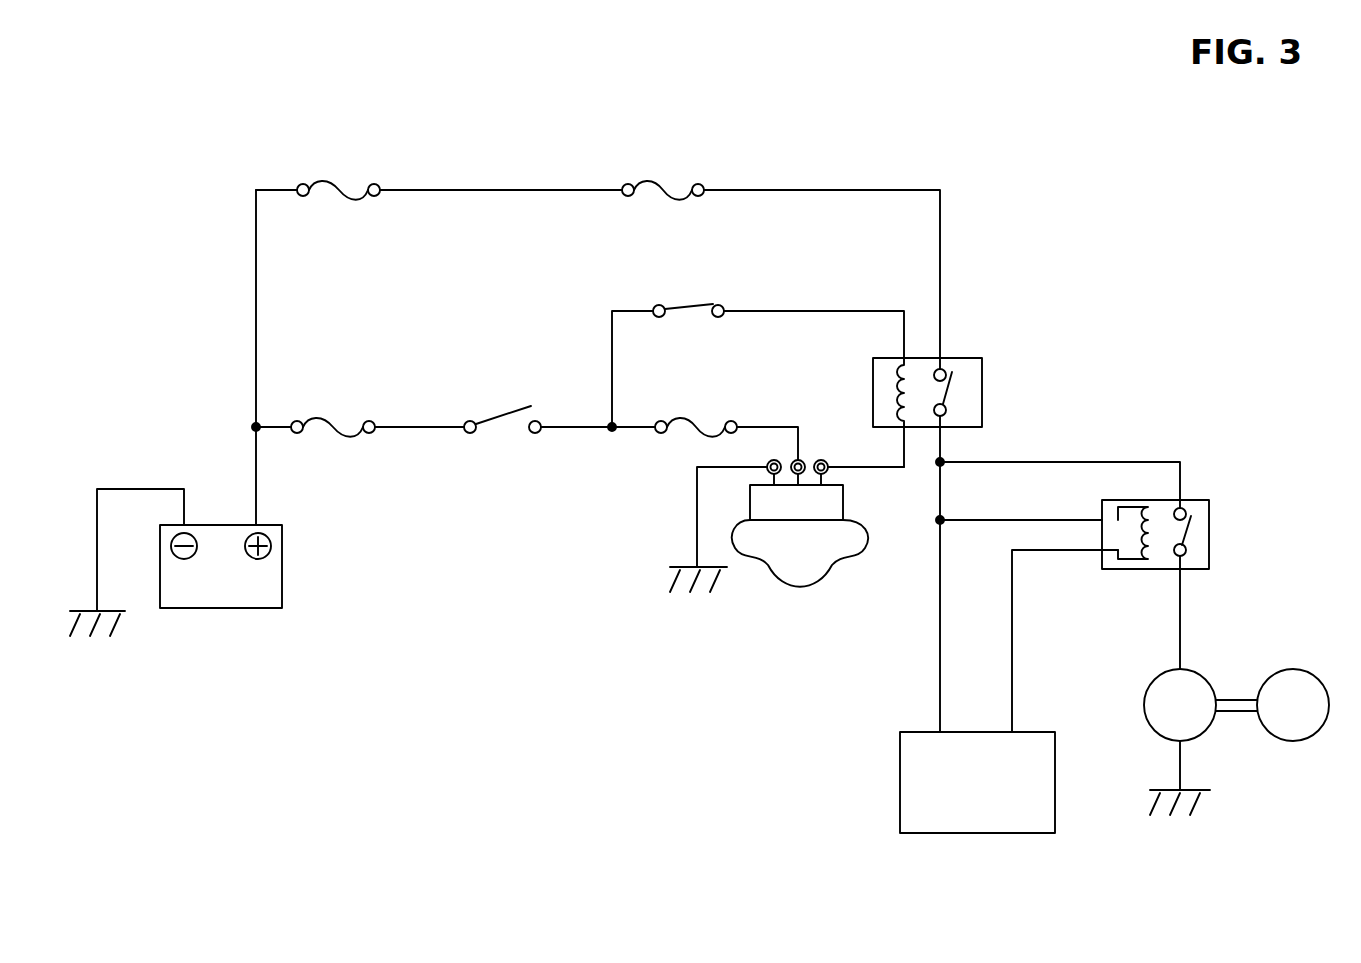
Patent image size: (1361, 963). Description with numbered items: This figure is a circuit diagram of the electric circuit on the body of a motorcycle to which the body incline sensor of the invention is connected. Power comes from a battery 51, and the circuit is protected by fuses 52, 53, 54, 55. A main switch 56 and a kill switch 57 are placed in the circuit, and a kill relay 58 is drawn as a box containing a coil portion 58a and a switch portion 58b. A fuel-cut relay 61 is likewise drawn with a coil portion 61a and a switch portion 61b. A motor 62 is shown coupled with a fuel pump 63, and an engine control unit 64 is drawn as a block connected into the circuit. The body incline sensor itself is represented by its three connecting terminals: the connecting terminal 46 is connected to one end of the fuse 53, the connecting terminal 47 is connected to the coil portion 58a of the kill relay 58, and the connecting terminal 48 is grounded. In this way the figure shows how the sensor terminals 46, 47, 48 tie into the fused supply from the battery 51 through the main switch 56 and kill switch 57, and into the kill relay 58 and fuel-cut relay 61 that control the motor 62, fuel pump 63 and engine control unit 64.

The connecting terminal 46 is at (800, 458).
The connecting terminal 47 is at (823, 458).
The connecting terminal 48 is at (767, 465).
The battery 51 is at (226, 523).
The fuse 52 is at (347, 436).
The fuse 53 is at (684, 417).
The fuse 54 is at (326, 181).
The fuse 55 is at (651, 181).
The main switch 56 is at (498, 388).
The kill switch 57 is at (676, 286).
The kill relay 58 is at (939, 368).
The coil portion 58a is at (899, 374).
The switch portion 58b is at (969, 392).
The fuel-cut relay 61 is at (1163, 473).
The coil portion 61a is at (1128, 505).
The switch portion 61b is at (1210, 528).
The motor 62 is at (1165, 672).
The fuel pump 63 is at (1300, 672).
The engine control unit 64 is at (990, 834).